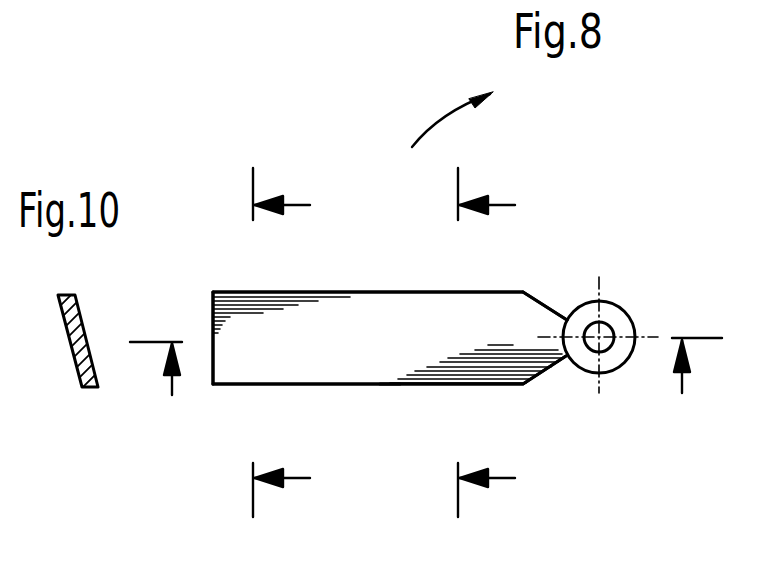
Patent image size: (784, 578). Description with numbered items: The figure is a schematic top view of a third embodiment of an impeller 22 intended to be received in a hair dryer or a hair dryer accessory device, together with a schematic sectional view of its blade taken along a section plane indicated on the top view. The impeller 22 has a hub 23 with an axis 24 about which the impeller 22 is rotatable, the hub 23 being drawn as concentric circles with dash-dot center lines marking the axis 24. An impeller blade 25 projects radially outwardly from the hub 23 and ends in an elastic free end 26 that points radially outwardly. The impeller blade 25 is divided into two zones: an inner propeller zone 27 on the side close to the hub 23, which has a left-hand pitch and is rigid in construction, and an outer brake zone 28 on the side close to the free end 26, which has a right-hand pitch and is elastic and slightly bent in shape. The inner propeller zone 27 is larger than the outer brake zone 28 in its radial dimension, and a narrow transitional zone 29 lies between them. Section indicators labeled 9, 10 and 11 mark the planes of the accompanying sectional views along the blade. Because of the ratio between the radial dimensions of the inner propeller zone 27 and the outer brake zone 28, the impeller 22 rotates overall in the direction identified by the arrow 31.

The impeller 22 is at (344, 432).
The hub 23 is at (587, 360).
The axis 24 is at (607, 324).
The impeller blade 25 is at (350, 372).
The free end 26 is at (220, 337).
The inner propeller zone 27 is at (485, 308).
The outer brake zone 28 is at (248, 373).
The transitional zone 29 is at (372, 328).
The arrow 31 is at (443, 118).
The section line 9 is at (426, 369).
The section line 10 is at (491, 341).
The section line 11 is at (282, 341).